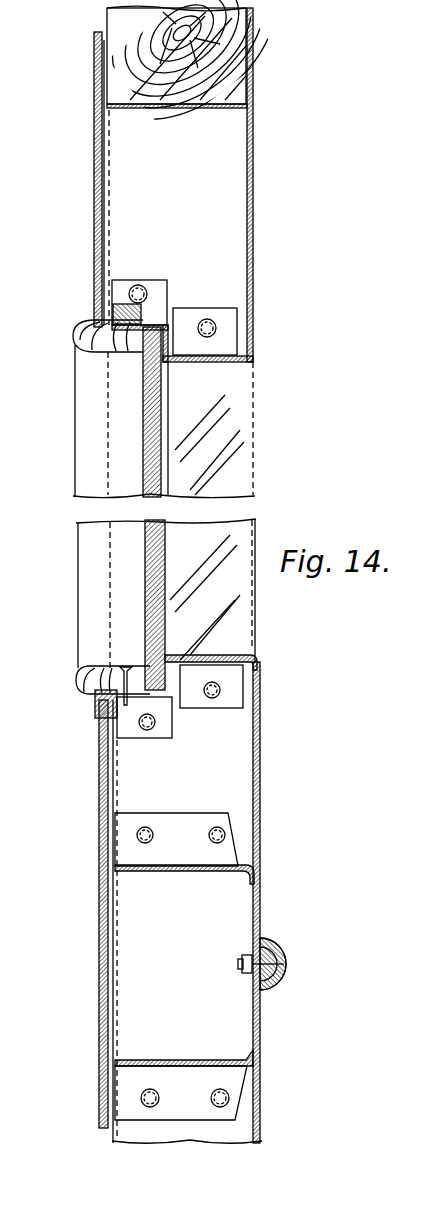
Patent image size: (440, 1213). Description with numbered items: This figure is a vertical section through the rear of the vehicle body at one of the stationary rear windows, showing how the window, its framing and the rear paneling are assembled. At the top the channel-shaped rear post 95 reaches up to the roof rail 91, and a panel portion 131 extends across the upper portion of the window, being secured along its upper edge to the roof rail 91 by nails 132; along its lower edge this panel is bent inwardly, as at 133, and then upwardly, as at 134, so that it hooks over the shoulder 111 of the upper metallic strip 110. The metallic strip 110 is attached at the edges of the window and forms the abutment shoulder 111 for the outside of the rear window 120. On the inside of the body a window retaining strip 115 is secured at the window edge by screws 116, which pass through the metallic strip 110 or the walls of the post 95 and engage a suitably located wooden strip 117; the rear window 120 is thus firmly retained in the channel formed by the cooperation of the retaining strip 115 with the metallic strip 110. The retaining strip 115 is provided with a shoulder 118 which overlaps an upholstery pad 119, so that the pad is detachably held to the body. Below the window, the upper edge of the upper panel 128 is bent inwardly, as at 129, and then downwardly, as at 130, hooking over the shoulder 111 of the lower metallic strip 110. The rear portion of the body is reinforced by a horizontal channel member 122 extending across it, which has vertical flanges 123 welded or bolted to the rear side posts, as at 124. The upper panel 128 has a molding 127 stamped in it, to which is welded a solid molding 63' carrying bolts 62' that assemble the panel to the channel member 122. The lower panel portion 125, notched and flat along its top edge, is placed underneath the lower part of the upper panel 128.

The roof rail 91 is at (236, 61).
The nails 132 is at (252, 95).
The post 95 is at (222, 167).
The panel portion 131 is at (255, 205).
The upholstery pads 119 is at (97, 210).
The shoulders 118 is at (82, 320).
The wooden strips 117 is at (145, 311).
The metallic strip 110 is at (172, 329).
The abutment shoulder 111 is at (185, 347).
The screws 116 is at (110, 347).
The inwardly bent lower edge 133 is at (212, 361).
The upwardly bent portion 134 is at (165, 383).
The rear windows 120 is at (146, 437).
The window retaining strips 115 is at (92, 589).
The downwardly bent portion 130 is at (167, 639).
The inwardly bent upper edge 129 is at (192, 647).
The vertical flanges 123 is at (195, 821).
The upper panel 128 is at (263, 837).
The welded or bolted connection 124 is at (212, 841).
The horizontal channel member 122 is at (245, 903).
The solid molding 63' is at (294, 957).
The bolts 62' is at (223, 957).
The molding 127 is at (284, 978).
The lower panel portion 125 is at (262, 1113).